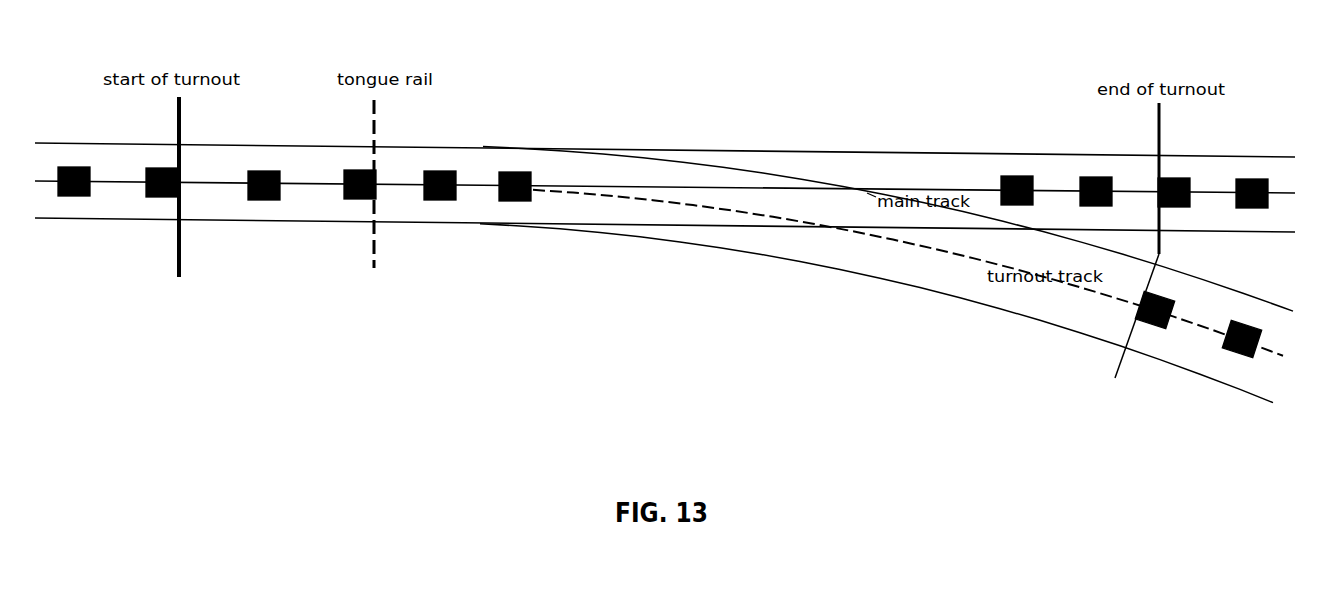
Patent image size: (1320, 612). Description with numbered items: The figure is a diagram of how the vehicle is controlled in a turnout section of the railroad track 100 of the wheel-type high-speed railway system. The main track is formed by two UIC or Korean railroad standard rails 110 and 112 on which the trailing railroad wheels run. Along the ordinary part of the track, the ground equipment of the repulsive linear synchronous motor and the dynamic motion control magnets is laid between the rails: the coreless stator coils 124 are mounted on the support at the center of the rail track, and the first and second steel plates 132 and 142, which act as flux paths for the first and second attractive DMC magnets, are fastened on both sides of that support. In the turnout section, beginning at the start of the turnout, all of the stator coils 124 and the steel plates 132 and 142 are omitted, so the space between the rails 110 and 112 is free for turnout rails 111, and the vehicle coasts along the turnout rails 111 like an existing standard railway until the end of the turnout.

The railroad track 100 is at (243, 118).
The standard rail 110 is at (712, 148).
The turnout rails 111 is at (663, 153).
The standard rail 112 is at (722, 226).
The coreless stator coils 124 is at (253, 222).
The first steel plate 132 is at (281, 187).
The second steel plate 142 is at (190, 200).